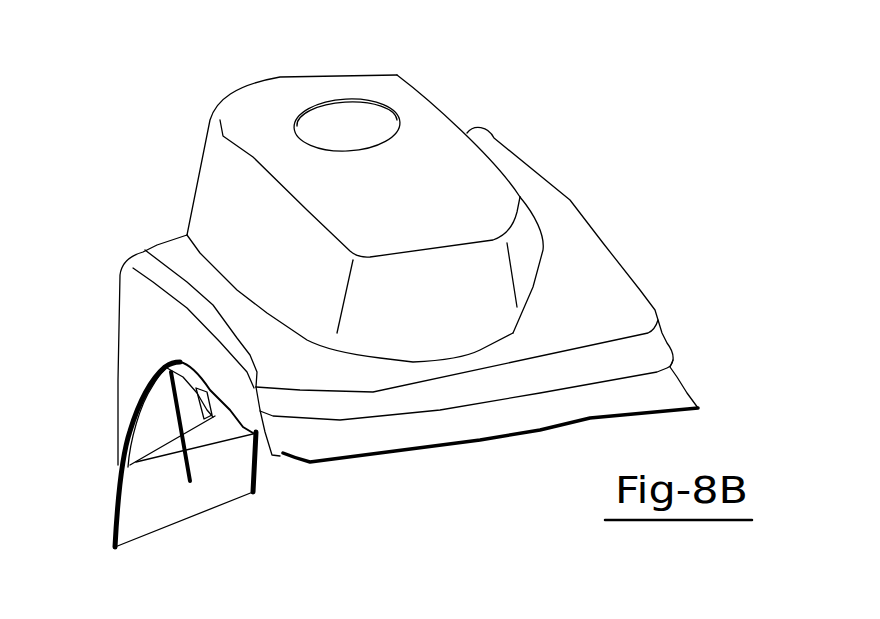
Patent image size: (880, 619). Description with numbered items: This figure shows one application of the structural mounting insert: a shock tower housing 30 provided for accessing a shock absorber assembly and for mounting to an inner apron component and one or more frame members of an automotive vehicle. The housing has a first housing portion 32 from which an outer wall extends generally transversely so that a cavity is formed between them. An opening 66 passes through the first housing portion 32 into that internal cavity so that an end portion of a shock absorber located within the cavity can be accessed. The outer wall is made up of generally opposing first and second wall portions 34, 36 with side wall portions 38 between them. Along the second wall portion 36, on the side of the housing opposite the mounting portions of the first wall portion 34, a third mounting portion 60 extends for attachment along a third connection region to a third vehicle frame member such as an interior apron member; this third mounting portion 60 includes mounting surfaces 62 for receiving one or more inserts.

The shock tower housing 30 is at (467, 62).
The first housing portion 32 is at (382, 88).
The first wall portion 34 is at (197, 173).
The second wall portion 36 is at (563, 338).
The side wall portions 38 is at (603, 243).
The third mounting portion 60 is at (470, 405).
The mounting surfaces 62 is at (592, 415).
The opening 66 is at (335, 127).